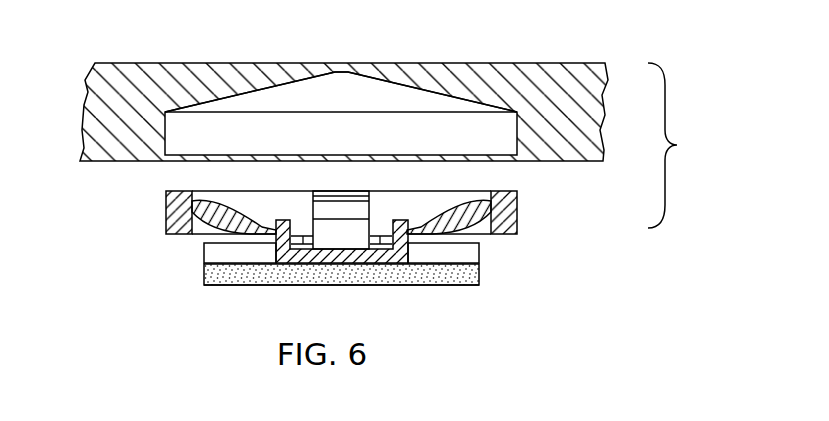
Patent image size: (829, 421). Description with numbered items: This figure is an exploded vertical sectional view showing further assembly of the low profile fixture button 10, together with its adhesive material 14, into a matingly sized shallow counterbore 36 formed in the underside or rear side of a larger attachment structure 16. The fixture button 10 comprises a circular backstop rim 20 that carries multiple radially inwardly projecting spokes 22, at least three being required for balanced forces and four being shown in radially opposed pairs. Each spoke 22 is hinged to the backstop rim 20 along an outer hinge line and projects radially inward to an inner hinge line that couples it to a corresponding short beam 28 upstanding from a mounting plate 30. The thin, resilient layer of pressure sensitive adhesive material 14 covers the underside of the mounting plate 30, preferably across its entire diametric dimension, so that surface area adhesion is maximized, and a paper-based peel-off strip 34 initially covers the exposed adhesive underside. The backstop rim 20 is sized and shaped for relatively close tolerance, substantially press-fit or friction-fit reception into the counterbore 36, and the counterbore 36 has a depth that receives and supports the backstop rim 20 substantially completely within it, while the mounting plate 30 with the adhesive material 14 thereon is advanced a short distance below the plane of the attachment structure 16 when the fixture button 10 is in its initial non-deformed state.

The low profile fixture button 10 is at (371, 189).
The adhesive material 14 is at (460, 277).
The attachment structure 16 is at (598, 72).
The backstop rim 20 is at (517, 204).
The spokes 22 is at (447, 208).
The short beams 28 is at (277, 222).
The mounting plate 30 is at (217, 252).
The peel-off strip 34 is at (203, 285).
The counterbore 36 is at (517, 140).